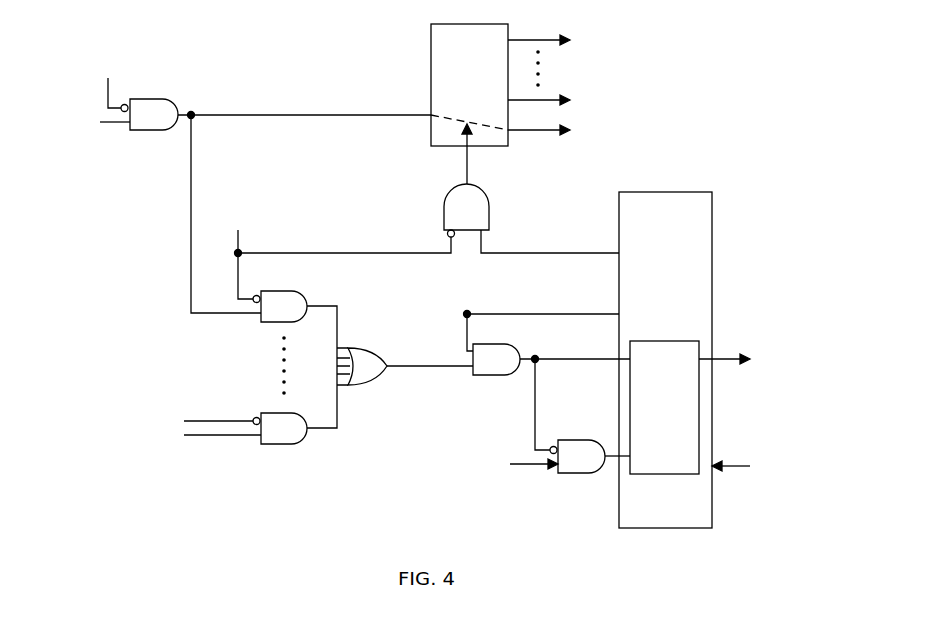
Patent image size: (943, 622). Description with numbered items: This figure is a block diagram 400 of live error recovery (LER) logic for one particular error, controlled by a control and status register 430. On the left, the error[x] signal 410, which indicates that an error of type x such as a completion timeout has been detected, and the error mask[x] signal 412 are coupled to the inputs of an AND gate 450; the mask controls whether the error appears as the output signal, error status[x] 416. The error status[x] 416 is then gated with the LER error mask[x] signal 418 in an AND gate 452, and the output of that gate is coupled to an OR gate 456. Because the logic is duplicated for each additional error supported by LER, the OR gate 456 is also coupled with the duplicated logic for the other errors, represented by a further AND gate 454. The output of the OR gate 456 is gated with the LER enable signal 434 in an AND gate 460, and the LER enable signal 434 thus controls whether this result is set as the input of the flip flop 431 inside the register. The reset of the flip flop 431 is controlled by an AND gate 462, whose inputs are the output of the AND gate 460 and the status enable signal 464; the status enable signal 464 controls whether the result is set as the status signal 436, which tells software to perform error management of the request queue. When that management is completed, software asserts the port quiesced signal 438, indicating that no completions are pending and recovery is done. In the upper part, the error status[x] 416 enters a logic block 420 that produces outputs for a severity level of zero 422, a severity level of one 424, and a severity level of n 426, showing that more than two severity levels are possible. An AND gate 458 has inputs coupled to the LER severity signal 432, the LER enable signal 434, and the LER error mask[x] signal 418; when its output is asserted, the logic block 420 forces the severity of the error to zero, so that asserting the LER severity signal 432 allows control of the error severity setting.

The block diagram 400 is at (428, 306).
The error[x] signal 410 is at (81, 123).
The error mask[x] signal 412 is at (107, 65).
The error status[x] 416 is at (304, 90).
The LER error mask[x] signal 418 is at (325, 225).
The logic block 420 is at (469, 85).
The severity level of 0 422 is at (608, 130).
The Severity 1 output 424 is at (608, 100).
The Severity n output 426 is at (608, 40).
The control and status register 430 is at (665, 360).
The flip flop 431 is at (664, 407).
The LER severity signal 432 is at (550, 217).
The LER enable signal 434 is at (542, 292).
The status signal 436 is at (757, 361).
The port quiesced signal 438 is at (767, 466).
The AND gate 450 is at (149, 114).
The AND gate 452 is at (249, 218).
The AND gate 454 is at (245, 428).
The OR gate 456 is at (390, 367).
The AND gate 458 is at (466, 180).
The AND gate 460 is at (548, 344).
The AND gate 462 is at (582, 416).
The status enable signal 464 is at (499, 463).